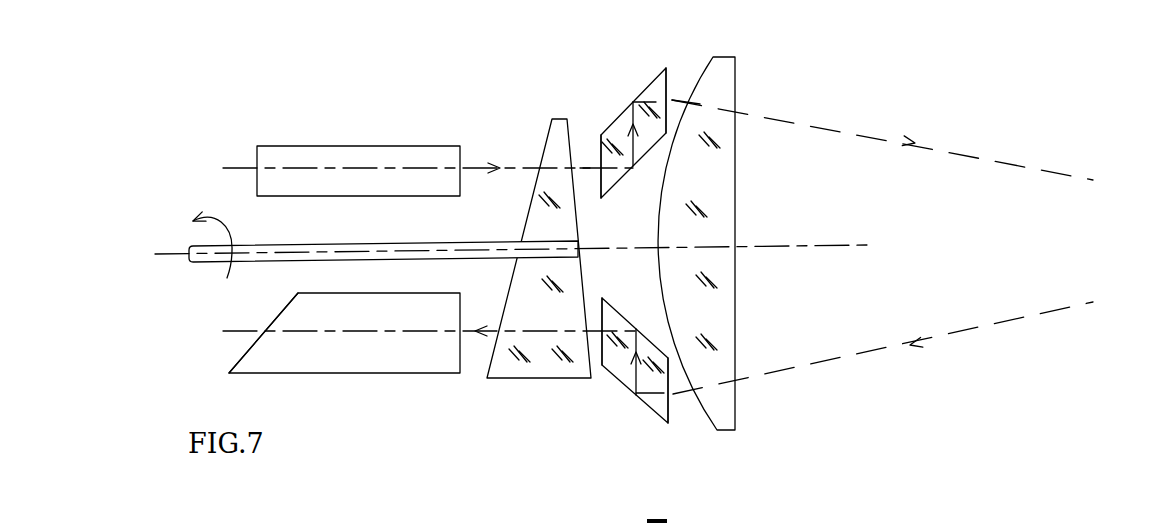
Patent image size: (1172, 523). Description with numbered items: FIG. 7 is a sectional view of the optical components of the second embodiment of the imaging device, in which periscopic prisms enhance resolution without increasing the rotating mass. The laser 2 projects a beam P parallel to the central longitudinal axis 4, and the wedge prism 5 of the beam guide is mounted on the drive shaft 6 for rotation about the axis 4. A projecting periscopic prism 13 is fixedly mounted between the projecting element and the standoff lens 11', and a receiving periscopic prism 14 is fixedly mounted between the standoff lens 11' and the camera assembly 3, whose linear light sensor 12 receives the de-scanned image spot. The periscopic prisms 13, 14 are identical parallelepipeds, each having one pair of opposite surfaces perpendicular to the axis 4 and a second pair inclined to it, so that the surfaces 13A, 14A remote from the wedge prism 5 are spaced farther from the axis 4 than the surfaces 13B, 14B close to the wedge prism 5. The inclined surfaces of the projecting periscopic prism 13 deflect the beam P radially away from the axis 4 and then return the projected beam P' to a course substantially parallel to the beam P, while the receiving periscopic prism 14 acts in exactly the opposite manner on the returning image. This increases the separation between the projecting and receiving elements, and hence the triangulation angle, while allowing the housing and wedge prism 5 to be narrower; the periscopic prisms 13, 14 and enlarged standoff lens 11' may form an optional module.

The laser 2 is at (323, 153).
The camera assembly 3 is at (315, 365).
The central longitudinal axis 4 is at (166, 249).
The wedge prism 5 is at (540, 375).
The drive shaft 6 is at (327, 247).
The standoff lens 11' is at (729, 243).
The linear light sensor 12 is at (282, 312).
The projecting periscopic prism 13 is at (648, 92).
The surface remote from the prism 13A is at (667, 76).
The surface close to the prism 13B is at (601, 142).
The receiving periscopic prism 14 is at (630, 382).
The surface remote from the prism 14A is at (669, 421).
The surface close to the prism 14B is at (603, 308).
The beam P is at (565, 122).
The projected beam P' is at (701, 66).